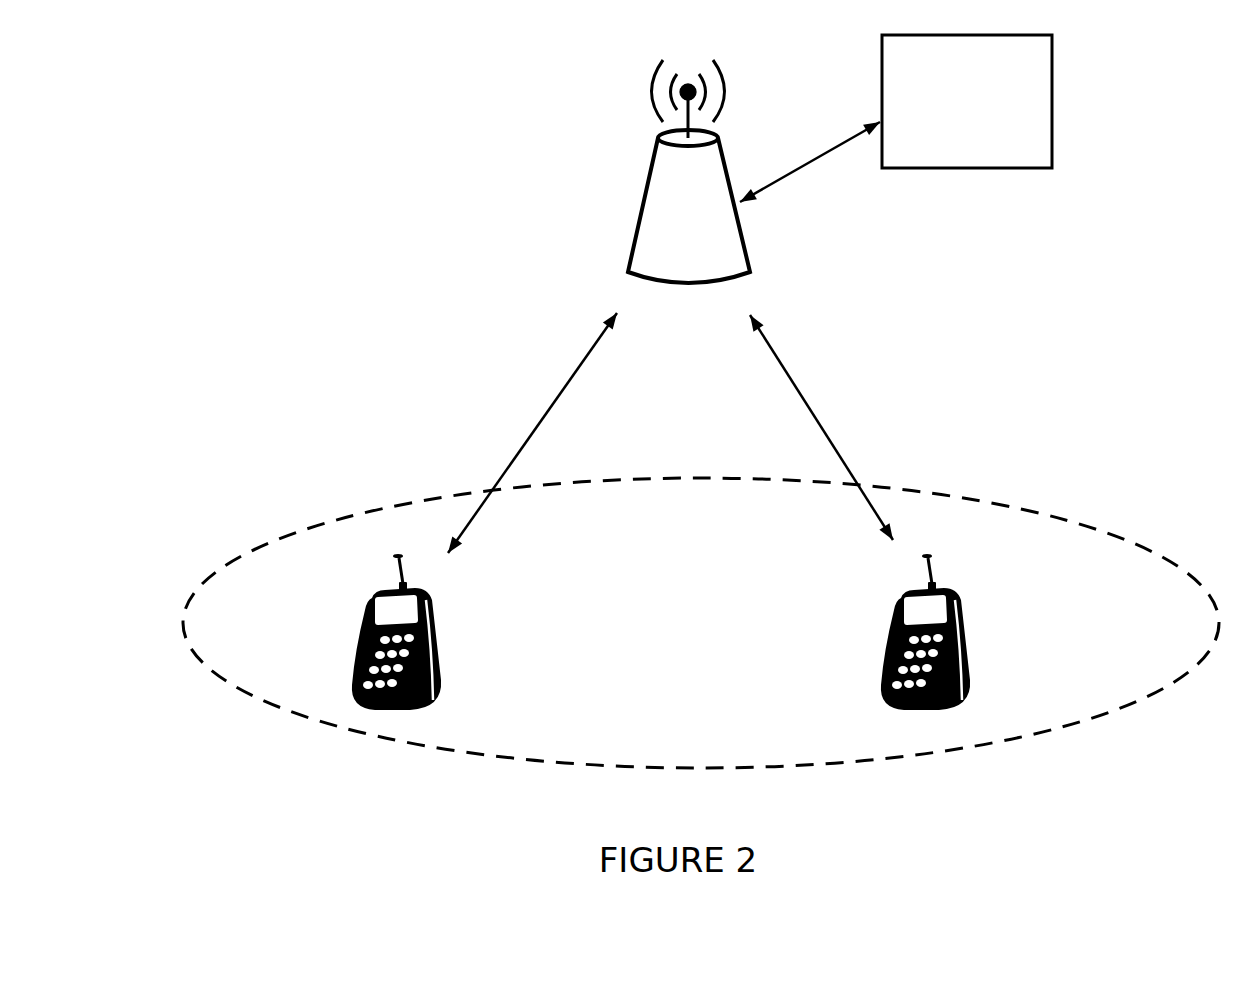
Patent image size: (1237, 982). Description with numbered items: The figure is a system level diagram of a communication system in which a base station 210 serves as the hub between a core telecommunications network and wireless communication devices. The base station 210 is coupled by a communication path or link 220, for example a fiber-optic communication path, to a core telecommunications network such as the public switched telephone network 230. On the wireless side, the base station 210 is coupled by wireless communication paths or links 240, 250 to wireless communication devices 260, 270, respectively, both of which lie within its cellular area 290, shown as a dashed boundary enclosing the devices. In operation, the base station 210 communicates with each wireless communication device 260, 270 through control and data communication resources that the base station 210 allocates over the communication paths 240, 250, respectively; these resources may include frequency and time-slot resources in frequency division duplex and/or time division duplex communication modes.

The base station 210 is at (669, 264).
The communication path or link 220 is at (810, 164).
The public switched telephone network 230 is at (984, 156).
The wireless communication path or link 240 is at (532, 433).
The wireless communication path or link 250 is at (821, 427).
The wireless communication device 260 is at (356, 612).
The wireless communication device 270 is at (989, 637).
The cellular area 290 is at (657, 647).